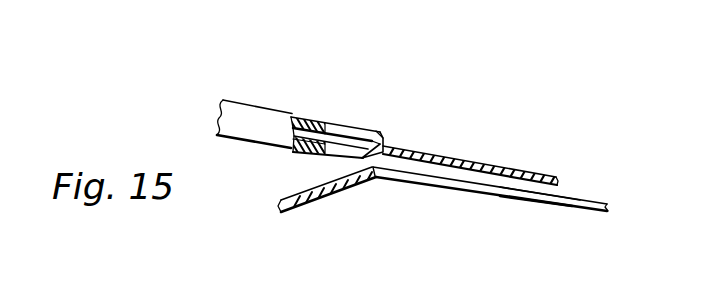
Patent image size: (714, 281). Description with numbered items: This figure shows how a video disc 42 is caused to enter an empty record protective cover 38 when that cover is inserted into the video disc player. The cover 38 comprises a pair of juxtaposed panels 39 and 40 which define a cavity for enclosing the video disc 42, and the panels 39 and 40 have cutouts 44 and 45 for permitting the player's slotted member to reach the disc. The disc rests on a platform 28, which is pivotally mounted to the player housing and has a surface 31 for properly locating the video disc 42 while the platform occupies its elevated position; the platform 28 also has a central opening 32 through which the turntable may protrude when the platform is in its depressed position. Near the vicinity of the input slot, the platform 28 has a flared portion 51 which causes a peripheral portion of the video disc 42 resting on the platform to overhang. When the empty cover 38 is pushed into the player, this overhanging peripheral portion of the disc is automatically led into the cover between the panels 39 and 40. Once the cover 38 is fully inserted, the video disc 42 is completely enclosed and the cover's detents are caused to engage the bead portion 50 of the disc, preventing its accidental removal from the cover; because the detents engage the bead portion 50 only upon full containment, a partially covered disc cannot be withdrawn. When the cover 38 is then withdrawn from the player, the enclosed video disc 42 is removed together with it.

The record protective cover 38 is at (280, 93).
The panel 39 is at (314, 130).
The panel 40 is at (297, 155).
The cutout 44 is at (343, 128).
The cutout 45 is at (343, 157).
The bead portion 50 is at (375, 128).
The video disc 42 is at (458, 162).
The flared portion 51 is at (285, 198).
The central opening 32 is at (432, 182).
The surface 31 is at (578, 194).
The platform 28 is at (572, 212).